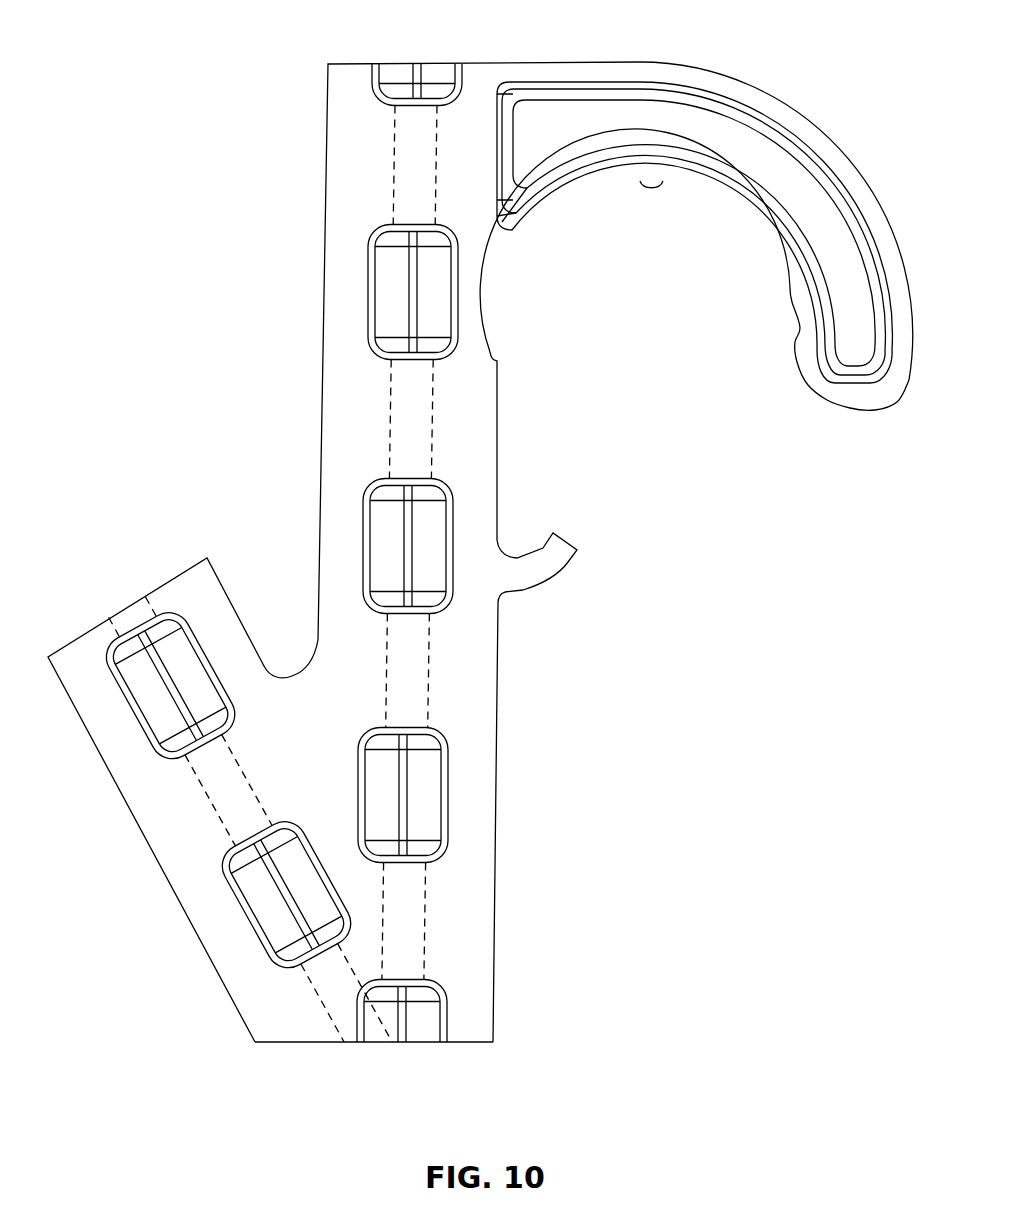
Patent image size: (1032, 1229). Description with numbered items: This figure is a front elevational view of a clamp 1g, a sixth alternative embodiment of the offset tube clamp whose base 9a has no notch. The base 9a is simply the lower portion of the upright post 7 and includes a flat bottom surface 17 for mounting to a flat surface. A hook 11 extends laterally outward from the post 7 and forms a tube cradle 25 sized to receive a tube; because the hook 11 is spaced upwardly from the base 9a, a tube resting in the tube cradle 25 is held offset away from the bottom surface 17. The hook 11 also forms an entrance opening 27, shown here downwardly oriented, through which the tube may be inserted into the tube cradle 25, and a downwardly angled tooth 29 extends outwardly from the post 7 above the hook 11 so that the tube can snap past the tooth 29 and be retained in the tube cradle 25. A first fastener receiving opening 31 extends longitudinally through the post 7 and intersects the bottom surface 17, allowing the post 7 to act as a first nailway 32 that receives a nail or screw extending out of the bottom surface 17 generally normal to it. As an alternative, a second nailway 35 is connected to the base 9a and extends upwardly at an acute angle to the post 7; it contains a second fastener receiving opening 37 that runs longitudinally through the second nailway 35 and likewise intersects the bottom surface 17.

The clamp 1g is at (147, 33).
The post 7 is at (324, 300).
The base 9a is at (494, 1010).
The hook 11 is at (818, 118).
The bottom surface 17 is at (428, 1043).
The tube cradle 25 is at (583, 195).
The entrance opening 27 is at (800, 327).
The tooth 29 is at (577, 551).
The first fastener receiving opening 31 is at (436, 430).
The first nailway 32 is at (328, 141).
The second nailway 35 is at (93, 740).
The second fastener receiving opening 37 is at (238, 762).